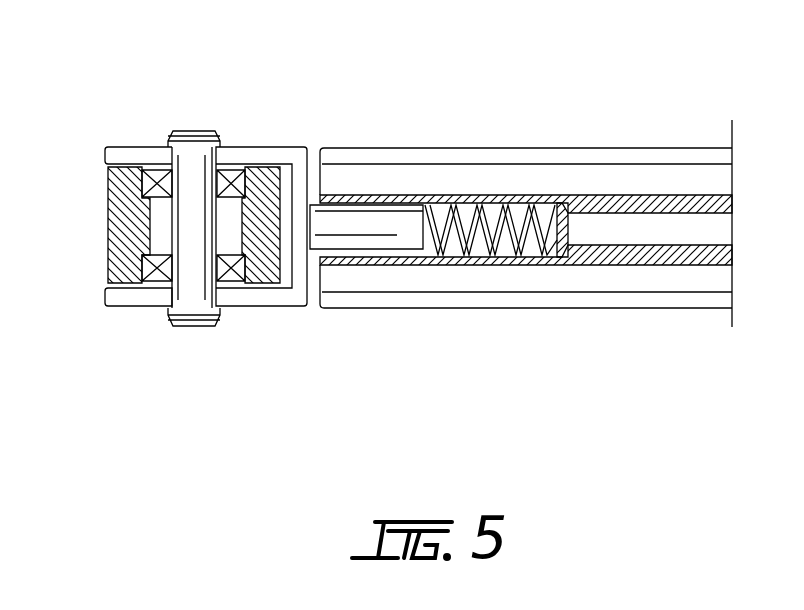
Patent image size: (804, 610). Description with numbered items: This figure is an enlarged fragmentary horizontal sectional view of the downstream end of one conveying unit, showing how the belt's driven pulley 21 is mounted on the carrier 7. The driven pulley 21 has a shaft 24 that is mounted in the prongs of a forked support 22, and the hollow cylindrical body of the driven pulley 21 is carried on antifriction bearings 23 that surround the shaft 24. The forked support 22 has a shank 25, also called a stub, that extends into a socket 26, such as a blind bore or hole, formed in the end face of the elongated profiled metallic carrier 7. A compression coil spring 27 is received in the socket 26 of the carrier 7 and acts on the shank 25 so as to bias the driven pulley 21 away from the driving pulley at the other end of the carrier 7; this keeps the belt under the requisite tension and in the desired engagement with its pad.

The carrier 7 is at (650, 148).
The driven pulley 21 is at (122, 232).
The forked support 22 is at (133, 300).
The antifriction bearings 23 is at (233, 163).
The shaft 24 is at (200, 160).
The shank 25 is at (397, 223).
The socket 26 is at (493, 262).
The compression coil spring 27 is at (513, 195).